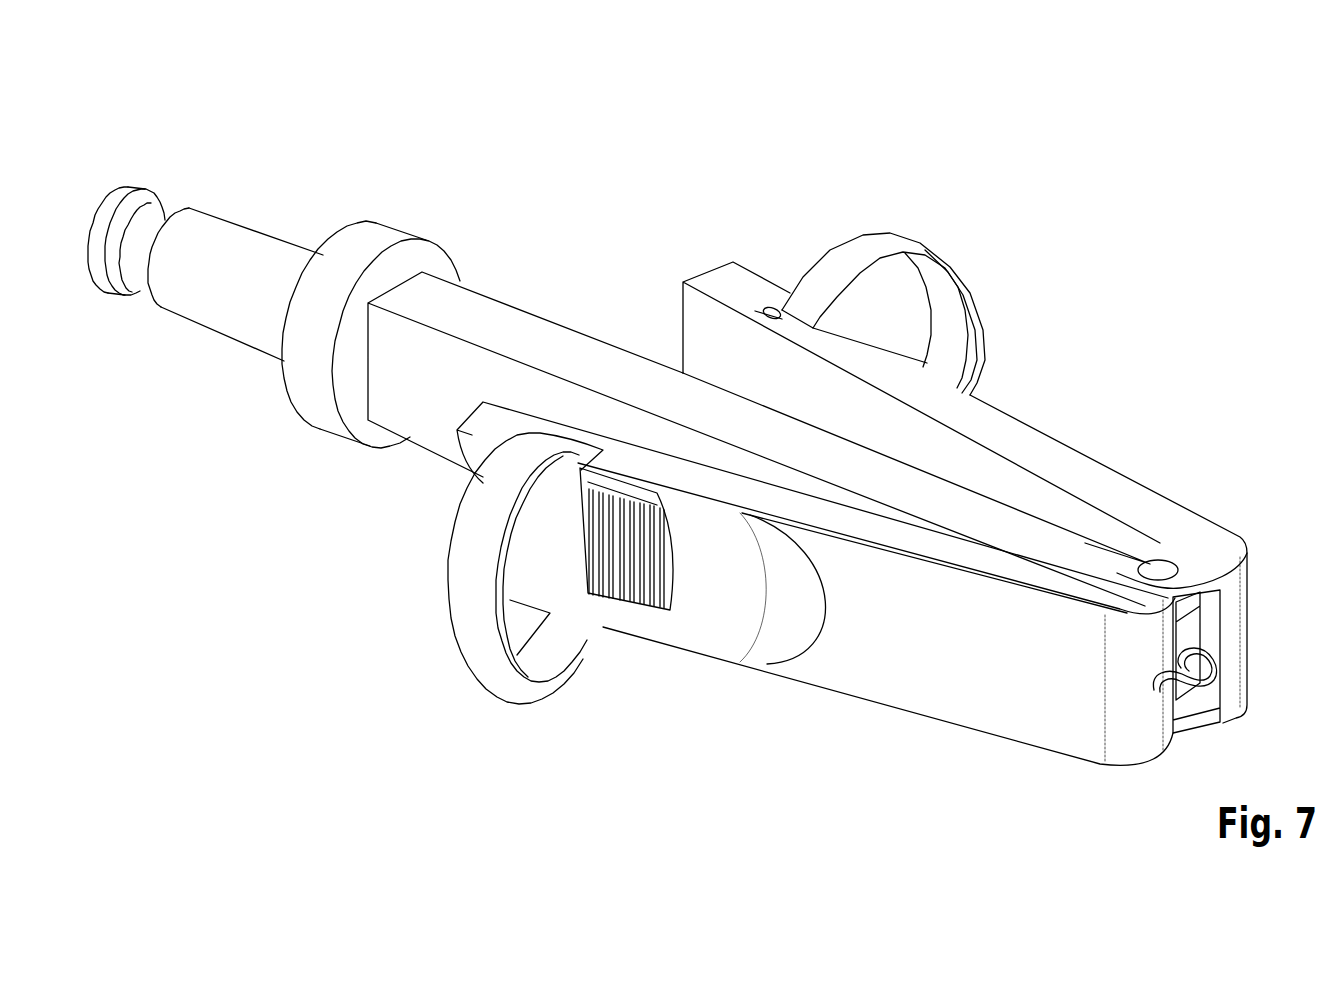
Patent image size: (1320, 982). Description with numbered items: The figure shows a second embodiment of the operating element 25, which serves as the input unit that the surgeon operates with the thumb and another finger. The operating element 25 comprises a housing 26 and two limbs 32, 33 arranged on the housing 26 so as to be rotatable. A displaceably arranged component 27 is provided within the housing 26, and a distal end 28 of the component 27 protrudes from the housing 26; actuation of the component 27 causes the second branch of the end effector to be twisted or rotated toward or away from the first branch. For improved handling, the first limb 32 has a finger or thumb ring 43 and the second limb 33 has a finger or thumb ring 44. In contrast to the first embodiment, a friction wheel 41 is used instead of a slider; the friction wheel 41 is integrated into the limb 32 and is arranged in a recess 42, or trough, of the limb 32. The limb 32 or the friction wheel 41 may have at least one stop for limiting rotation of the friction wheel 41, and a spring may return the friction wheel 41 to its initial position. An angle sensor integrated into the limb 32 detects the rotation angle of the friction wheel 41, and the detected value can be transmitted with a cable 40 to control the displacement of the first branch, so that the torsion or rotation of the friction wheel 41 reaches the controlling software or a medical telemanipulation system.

The operating element 25 is at (574, 106).
The housing 26 is at (540, 335).
The component 27 is at (152, 222).
The distal end 28 is at (122, 190).
The first limb 32 is at (957, 710).
The second limb 33 is at (1054, 453).
The cable 40 is at (1207, 668).
The friction wheel 41 is at (633, 597).
The recess 42 is at (715, 618).
The finger or thumb ring 43 is at (487, 680).
The finger or thumb ring 44 is at (880, 245).